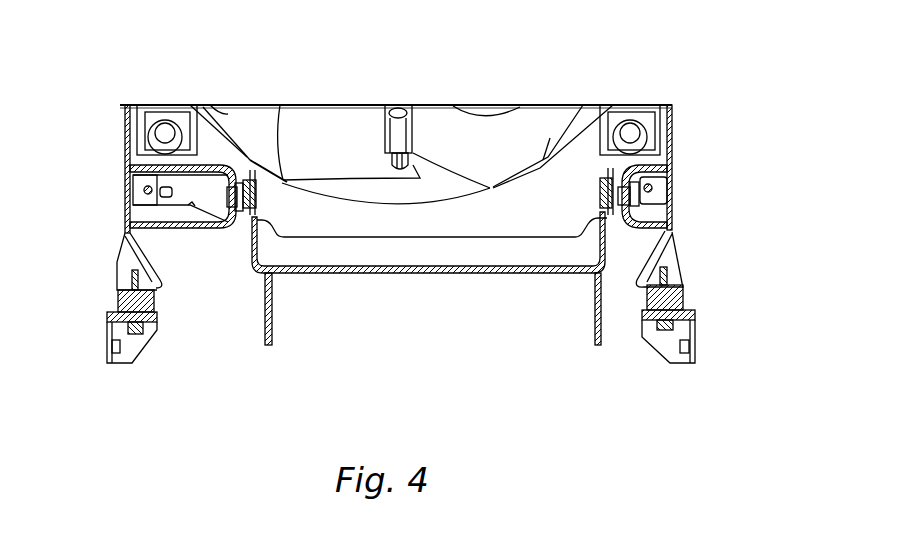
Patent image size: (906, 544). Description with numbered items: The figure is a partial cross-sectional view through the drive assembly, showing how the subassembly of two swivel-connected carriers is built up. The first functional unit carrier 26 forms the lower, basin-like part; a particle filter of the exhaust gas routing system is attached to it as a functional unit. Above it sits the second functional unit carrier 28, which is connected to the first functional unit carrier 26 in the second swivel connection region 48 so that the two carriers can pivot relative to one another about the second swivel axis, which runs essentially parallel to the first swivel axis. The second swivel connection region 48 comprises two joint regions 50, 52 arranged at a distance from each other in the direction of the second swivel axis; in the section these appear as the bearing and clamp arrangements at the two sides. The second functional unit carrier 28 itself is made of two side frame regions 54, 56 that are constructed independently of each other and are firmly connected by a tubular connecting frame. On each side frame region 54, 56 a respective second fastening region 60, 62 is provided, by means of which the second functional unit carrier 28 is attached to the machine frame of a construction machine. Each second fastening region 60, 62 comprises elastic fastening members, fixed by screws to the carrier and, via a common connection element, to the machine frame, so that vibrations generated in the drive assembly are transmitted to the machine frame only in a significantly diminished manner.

The first functional unit carrier 26 is at (448, 273).
The second functional unit carrier 28 is at (122, 103).
The second swivel connection region 48 is at (685, 138).
The joint region 50 is at (658, 188).
The joint region 52 is at (245, 158).
The side frame region 54 is at (670, 165).
The side frame region 56 is at (127, 163).
The second fastening region 60 is at (710, 308).
The second fastening region 62 is at (150, 323).